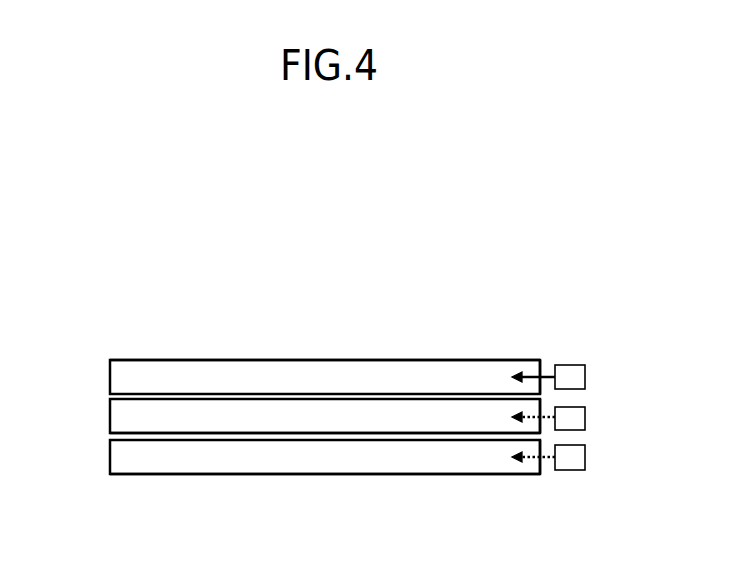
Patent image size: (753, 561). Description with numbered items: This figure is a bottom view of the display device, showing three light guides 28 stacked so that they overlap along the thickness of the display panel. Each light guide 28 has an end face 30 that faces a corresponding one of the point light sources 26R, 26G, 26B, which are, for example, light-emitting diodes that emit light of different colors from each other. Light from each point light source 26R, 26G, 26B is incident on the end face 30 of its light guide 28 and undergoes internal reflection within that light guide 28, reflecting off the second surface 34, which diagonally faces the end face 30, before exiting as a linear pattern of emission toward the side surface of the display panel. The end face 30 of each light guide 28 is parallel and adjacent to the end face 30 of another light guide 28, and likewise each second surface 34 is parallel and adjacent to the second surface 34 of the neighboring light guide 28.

The light guide 28 is at (110, 370).
The second surface 34 is at (318, 363).
The end face 30 is at (541, 363).
The point light source 26R is at (586, 377).
The point light source 26G is at (586, 420).
The point light source 26B is at (586, 458).